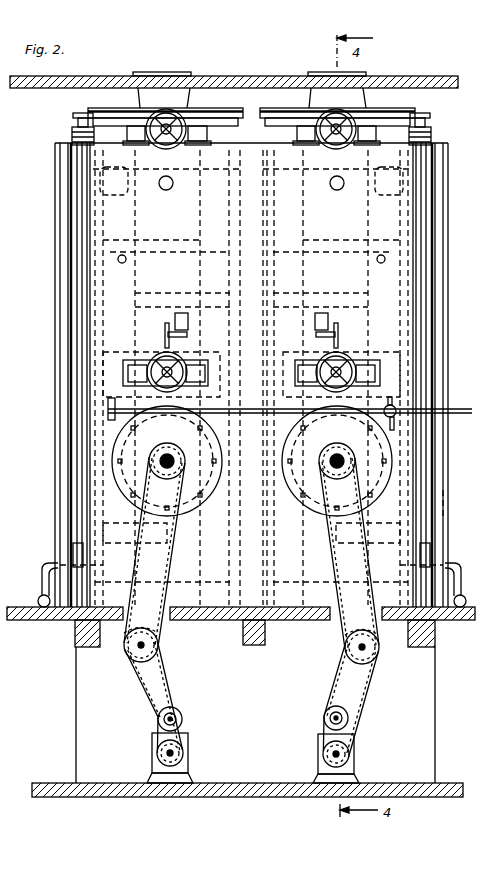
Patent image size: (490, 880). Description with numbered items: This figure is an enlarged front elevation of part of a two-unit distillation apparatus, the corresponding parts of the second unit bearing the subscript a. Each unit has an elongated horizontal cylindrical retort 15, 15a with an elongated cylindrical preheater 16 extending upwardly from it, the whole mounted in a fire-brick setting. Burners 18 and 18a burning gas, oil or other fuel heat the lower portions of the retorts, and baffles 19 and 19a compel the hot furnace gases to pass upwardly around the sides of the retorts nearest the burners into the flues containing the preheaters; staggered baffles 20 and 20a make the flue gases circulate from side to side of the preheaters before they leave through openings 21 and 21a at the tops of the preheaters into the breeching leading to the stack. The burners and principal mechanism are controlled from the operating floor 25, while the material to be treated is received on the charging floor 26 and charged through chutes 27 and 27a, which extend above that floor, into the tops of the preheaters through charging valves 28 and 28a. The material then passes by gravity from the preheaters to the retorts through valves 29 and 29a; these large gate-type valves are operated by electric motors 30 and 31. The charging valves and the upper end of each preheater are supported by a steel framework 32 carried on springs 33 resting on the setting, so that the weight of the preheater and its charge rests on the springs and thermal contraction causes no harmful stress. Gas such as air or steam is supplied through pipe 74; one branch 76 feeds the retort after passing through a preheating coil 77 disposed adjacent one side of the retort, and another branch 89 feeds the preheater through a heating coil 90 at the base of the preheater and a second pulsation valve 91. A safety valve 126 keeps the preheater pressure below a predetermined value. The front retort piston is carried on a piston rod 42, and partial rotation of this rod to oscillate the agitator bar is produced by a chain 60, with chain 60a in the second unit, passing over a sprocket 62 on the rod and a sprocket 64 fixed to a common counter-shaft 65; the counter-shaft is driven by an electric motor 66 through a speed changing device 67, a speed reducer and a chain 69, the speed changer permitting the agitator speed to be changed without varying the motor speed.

The charging floor 26 is at (440, 78).
The chute 27a is at (177, 75).
The chute 27 is at (358, 76).
The charging valve 28a is at (136, 128).
The charging valve 28 is at (364, 126).
The electric motor 30 is at (187, 109).
The steel framework 32 is at (397, 115).
The springs 33 is at (433, 133).
The opening 21a is at (55, 176).
The opening 21 is at (440, 178).
The preheater 16 is at (448, 206).
The safety valve 126 is at (336, 192).
The staggered baffle 20a is at (164, 243).
The staggered baffle 20 is at (335, 250).
The second pulsation valve 91 is at (165, 336).
The electric motor 31 is at (155, 354).
The valve 29a is at (123, 372).
The valve 29 is at (343, 366).
The heating coil 90 is at (382, 395).
The branch 89 is at (397, 398).
The pipe 74 is at (458, 412).
The retort 15a is at (117, 441).
The retort 15 is at (388, 443).
The baffle 19 is at (272, 432).
The baffle 19a is at (233, 488).
The piston rod 42 is at (339, 453).
The sprocket 62 is at (350, 458).
The branch 76 is at (394, 425).
The preheating coil 77 is at (410, 491).
The burner 18a is at (50, 563).
The burner 18 is at (461, 565).
The operating floor 25 is at (20, 607).
The chain 60a is at (173, 558).
The chain 60 is at (328, 552).
The sprocket 64 is at (352, 654).
The counter-shaft 65 is at (374, 667).
The electric motor 66 is at (325, 714).
The chain 69 is at (367, 706).
The speed changing device 67 is at (318, 750).